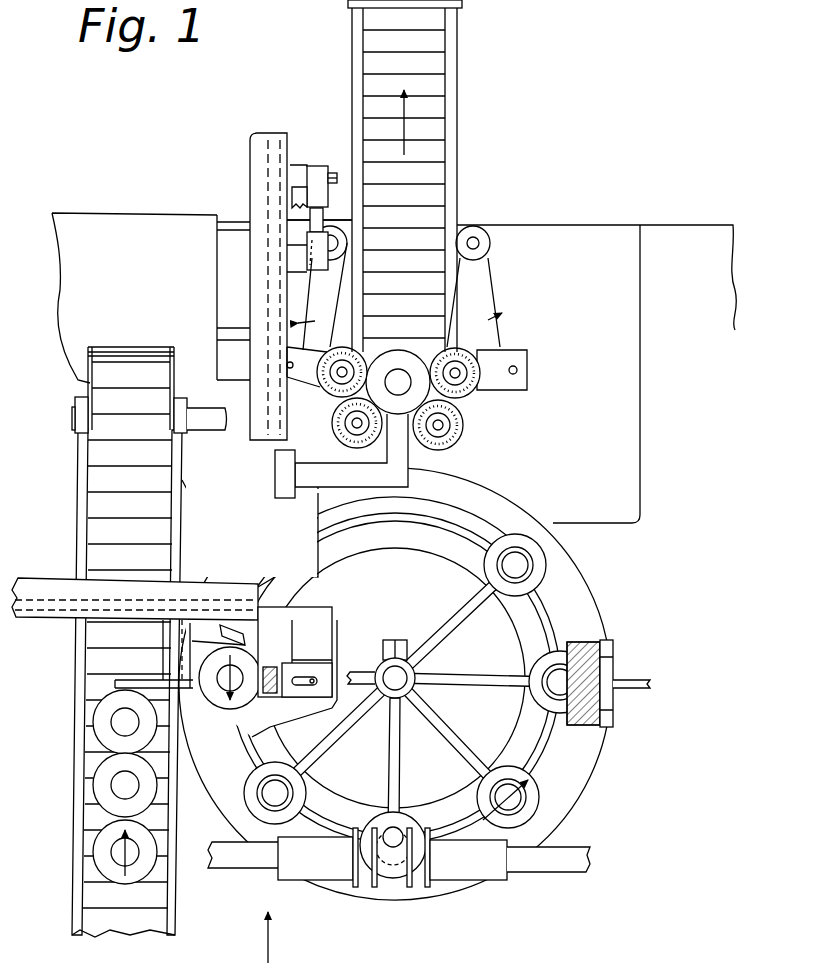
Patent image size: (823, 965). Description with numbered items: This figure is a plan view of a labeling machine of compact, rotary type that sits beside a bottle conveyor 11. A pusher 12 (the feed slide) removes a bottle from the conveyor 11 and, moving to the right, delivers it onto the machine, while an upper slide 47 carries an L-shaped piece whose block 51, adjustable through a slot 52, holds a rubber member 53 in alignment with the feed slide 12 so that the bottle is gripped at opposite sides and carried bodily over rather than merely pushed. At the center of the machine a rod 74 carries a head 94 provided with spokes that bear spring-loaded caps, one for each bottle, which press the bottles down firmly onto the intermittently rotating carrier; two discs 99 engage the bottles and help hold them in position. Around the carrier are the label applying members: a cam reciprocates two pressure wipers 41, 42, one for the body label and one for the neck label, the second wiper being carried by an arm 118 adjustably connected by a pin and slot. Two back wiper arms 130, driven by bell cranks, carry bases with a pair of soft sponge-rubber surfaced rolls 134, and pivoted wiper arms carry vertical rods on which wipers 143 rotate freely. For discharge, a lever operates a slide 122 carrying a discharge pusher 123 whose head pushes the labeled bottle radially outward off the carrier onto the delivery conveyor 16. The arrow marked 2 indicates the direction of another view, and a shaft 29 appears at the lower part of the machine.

The section line of Fig. 2 is at (277, 937).
The conveyor 11 is at (58, 780).
The pusher 12 is at (190, 660).
The delivery conveyor 16 is at (430, 110).
The shaft 29 is at (545, 868).
The pressure wiper 41 is at (578, 727).
The pressure wiper 42 is at (597, 665).
The upper slide 47 is at (286, 612).
The block 51 is at (288, 667).
The slot 52 is at (303, 677).
The rubber member 53 is at (241, 686).
The rod 74 is at (393, 676).
The head 94 is at (448, 688).
The discs 99 is at (500, 627).
The arm 118 is at (637, 698).
The slide 122 is at (275, 472).
The discharge pusher 123 is at (393, 477).
The back wiper arms 130 is at (330, 290).
The soft rubber surfaced rolls 134 is at (323, 387).
The wipers 143 is at (345, 432).